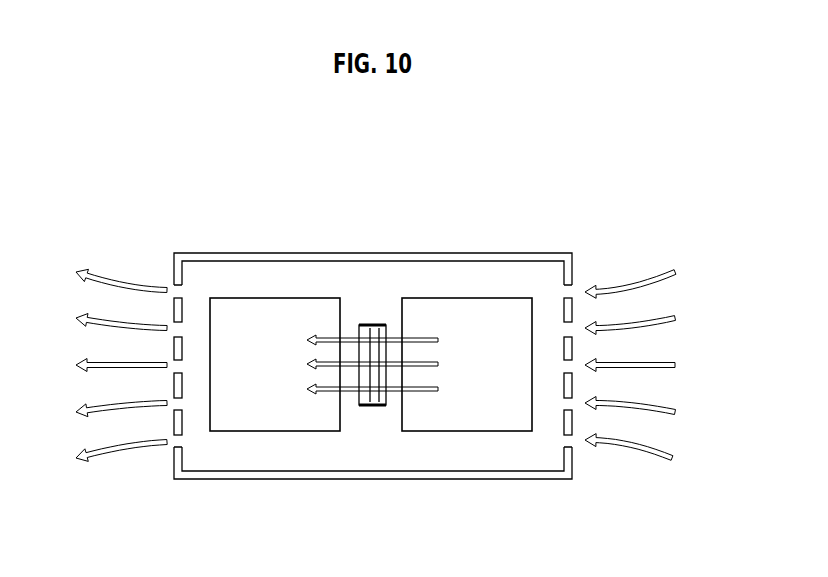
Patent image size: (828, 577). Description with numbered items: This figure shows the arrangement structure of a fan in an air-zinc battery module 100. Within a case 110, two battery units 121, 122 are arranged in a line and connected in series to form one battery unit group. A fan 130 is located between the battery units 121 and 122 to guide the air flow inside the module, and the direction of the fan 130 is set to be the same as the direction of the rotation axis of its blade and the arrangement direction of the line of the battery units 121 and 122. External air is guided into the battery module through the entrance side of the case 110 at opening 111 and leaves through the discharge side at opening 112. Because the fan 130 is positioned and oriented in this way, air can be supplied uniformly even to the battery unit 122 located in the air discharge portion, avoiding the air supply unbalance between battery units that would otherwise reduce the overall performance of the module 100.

The air-zinc battery module 100 is at (603, 140).
The case 110 is at (383, 254).
The inlet 111 is at (568, 291).
The outlet 112 is at (170, 288).
The battery unit 121 is at (478, 418).
The battery unit 122 is at (267, 418).
The fan 130 is at (367, 362).